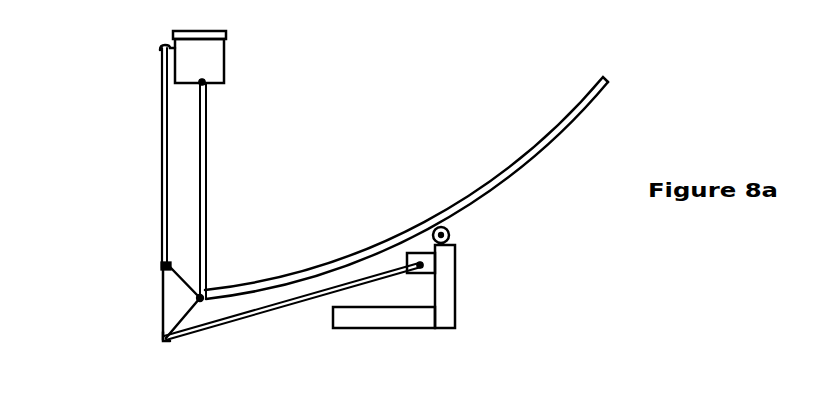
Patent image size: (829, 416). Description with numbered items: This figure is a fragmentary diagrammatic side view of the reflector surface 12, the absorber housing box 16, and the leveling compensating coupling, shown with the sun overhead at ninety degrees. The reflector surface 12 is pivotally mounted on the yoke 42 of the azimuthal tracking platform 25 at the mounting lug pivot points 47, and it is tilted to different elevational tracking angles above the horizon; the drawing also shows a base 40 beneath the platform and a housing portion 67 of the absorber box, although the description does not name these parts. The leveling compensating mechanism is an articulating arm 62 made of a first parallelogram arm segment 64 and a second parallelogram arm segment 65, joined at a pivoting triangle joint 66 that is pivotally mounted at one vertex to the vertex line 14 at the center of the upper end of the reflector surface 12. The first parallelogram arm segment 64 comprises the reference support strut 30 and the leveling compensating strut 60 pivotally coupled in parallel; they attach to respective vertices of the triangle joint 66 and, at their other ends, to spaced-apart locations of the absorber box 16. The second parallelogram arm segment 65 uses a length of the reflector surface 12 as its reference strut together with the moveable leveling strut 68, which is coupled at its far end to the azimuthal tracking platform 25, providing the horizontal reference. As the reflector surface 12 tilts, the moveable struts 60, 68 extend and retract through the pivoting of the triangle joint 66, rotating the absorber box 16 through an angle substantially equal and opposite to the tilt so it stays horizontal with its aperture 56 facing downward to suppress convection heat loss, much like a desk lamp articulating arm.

The reflector surface 12 is at (528, 145).
The vertex line 14 is at (222, 276).
The absorber housing box 16 is at (227, 47).
The azimuthal tracking platform 25 is at (456, 306).
The reference support strut 30 is at (207, 190).
The base 40 is at (388, 316).
The yoke 42 is at (448, 256).
The mounting lug pivot points 47 is at (436, 227).
The aperture 56 is at (203, 84).
The leveling compensating strut 60 is at (160, 117).
The articulating arm 62 is at (106, 188).
The first parallelogram arm segment 64 is at (193, 208).
The second parallelogram arm segment 65 is at (285, 287).
The pivoting triangle joint 66 is at (175, 282).
The receiver housing 67 is at (225, 77).
The moveable leveling strut 68 is at (227, 325).